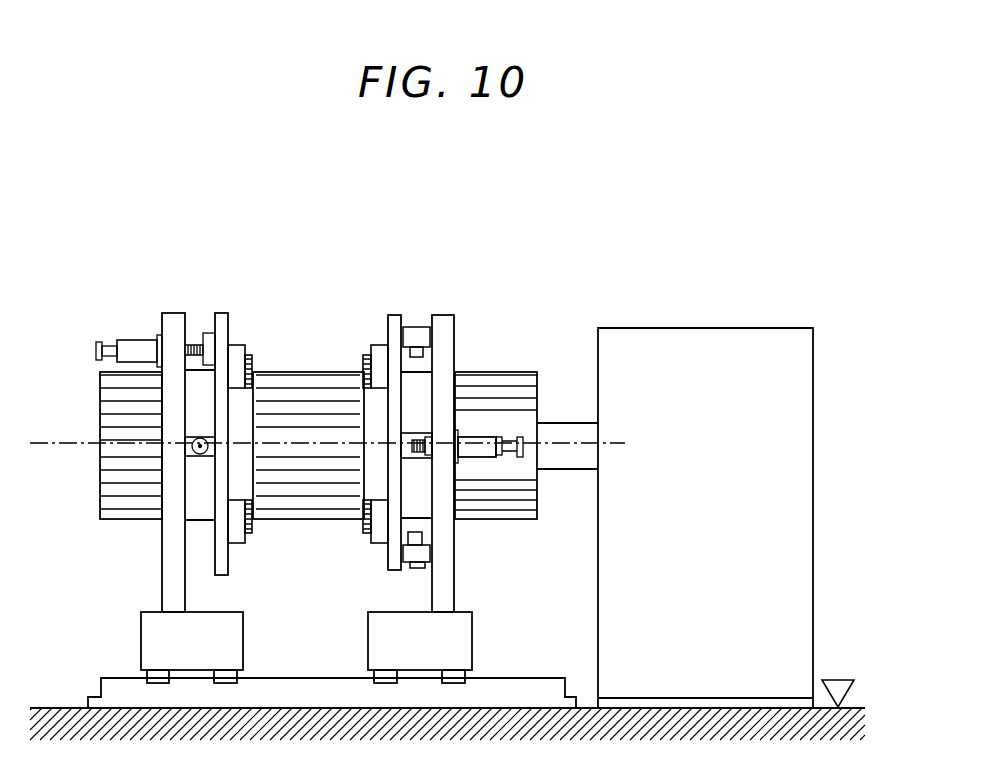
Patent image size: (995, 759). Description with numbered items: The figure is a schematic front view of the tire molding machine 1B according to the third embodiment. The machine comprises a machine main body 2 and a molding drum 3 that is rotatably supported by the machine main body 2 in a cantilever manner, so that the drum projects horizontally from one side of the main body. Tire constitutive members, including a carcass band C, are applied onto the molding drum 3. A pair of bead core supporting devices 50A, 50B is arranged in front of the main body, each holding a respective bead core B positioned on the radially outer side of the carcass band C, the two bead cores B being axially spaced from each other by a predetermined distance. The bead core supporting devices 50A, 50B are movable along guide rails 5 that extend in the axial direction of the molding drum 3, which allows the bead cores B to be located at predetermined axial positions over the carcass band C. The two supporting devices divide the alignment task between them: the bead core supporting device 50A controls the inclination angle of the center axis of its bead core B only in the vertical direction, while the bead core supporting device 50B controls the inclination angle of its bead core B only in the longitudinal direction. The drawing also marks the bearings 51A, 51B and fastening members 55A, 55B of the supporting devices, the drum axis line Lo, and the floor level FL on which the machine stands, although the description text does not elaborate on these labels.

The tire molding machine 1B is at (480, 270).
The machine main body 2 is at (703, 364).
The molding drum 3 is at (488, 412).
The guide rails 5 is at (503, 686).
The bead core supporting device 50A is at (196, 300).
The bead core supporting device 50B is at (427, 298).
The first bearing 51A is at (119, 336).
The second bearing 51B is at (478, 456).
The first fastening member 55A is at (202, 462).
The second fastening member 55B is at (412, 318).
The bead core B is at (355, 534).
The carcass band C is at (477, 385).
The rotor axis line Lo is at (57, 447).
The floor level FL is at (838, 679).